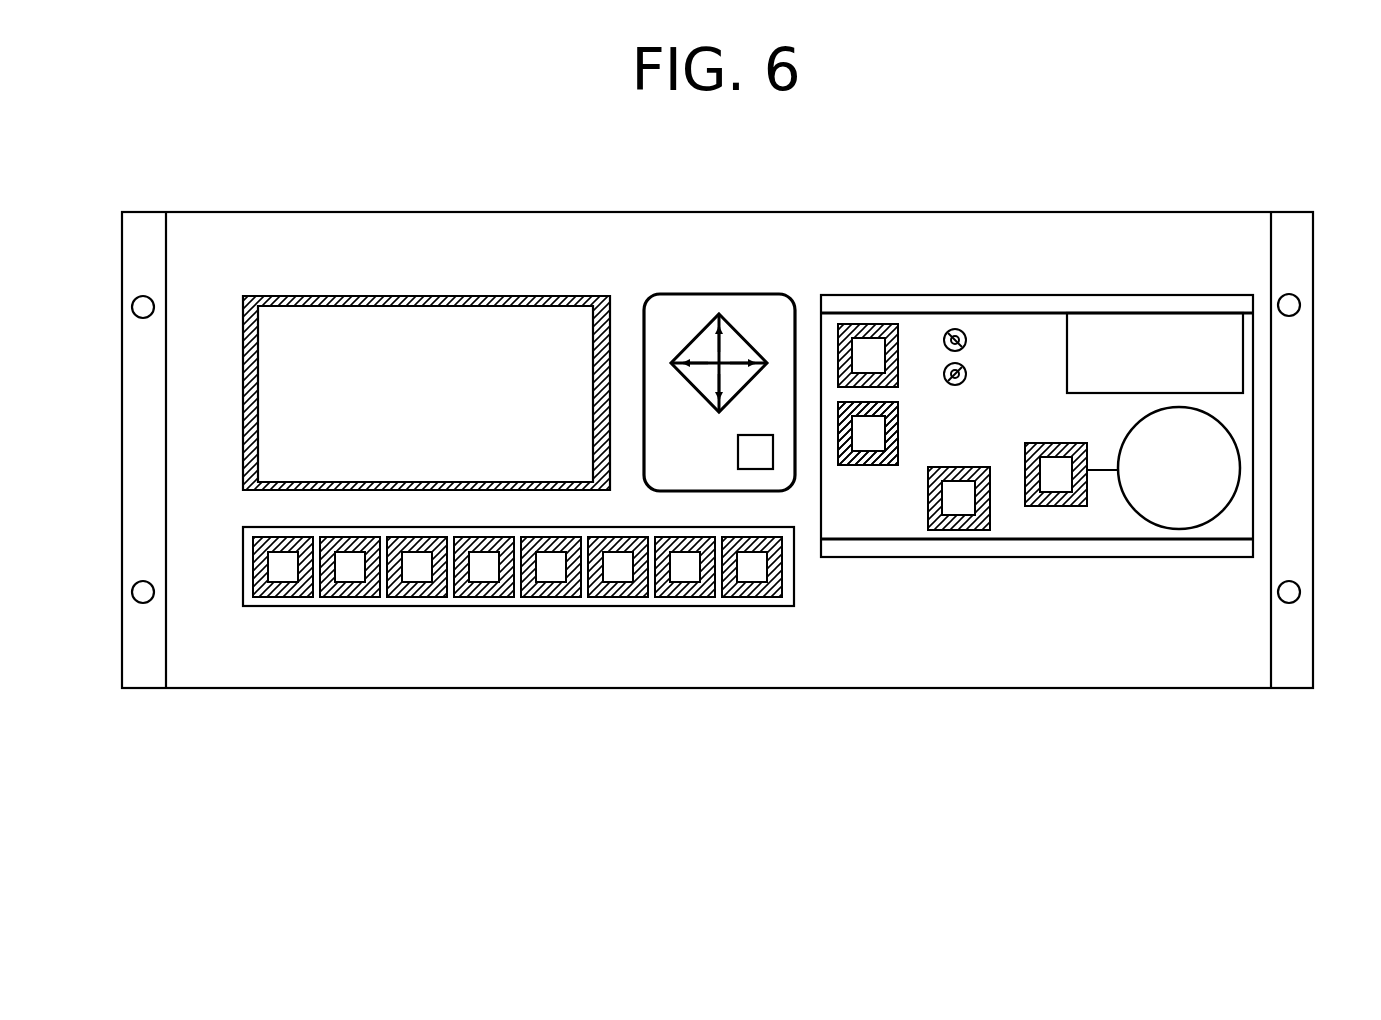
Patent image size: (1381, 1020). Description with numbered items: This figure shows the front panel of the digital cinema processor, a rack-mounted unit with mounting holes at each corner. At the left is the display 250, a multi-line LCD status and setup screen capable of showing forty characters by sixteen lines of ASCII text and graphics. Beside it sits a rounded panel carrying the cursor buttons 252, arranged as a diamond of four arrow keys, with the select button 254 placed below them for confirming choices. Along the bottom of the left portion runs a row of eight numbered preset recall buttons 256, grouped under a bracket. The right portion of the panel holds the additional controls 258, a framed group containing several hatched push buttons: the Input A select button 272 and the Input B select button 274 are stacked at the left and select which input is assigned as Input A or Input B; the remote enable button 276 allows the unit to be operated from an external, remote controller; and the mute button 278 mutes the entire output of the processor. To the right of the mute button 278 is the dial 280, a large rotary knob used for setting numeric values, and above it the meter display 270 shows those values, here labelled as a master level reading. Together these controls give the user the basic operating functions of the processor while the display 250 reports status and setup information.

The display 250 is at (392, 318).
The cursor buttons 252 is at (692, 320).
The select button 254 is at (763, 440).
The preset recall buttons 256 is at (798, 615).
The additional controls 258 is at (1253, 575).
The meter display 270 is at (1232, 327).
The Input A select button 272 is at (867, 348).
The Input B select button 274 is at (868, 440).
The remote enable button 276 is at (957, 505).
The mute button 278 is at (1055, 482).
The dial 280 is at (1219, 467).